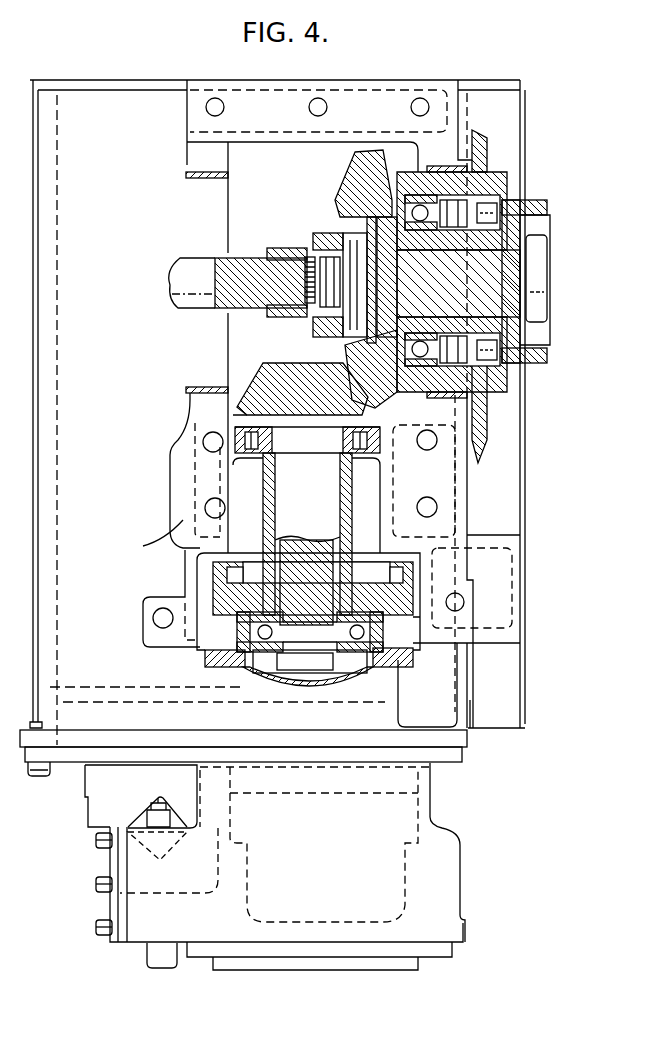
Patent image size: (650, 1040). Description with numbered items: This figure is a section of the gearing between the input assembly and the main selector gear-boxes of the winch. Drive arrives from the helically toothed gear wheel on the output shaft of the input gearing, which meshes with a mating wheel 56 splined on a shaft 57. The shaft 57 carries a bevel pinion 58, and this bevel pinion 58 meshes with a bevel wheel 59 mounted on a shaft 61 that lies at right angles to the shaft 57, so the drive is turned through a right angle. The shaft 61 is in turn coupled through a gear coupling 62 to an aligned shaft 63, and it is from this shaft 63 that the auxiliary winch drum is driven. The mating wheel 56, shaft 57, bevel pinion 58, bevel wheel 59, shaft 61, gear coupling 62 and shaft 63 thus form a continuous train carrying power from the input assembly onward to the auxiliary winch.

The mating wheel 56 is at (220, 580).
The shaft 57 is at (283, 497).
The bevel pinion 58 is at (268, 392).
The bevel wheel 59 is at (345, 177).
The shaft 61 is at (340, 222).
The gear coupling 62 is at (316, 240).
The shaft 63 is at (192, 263).